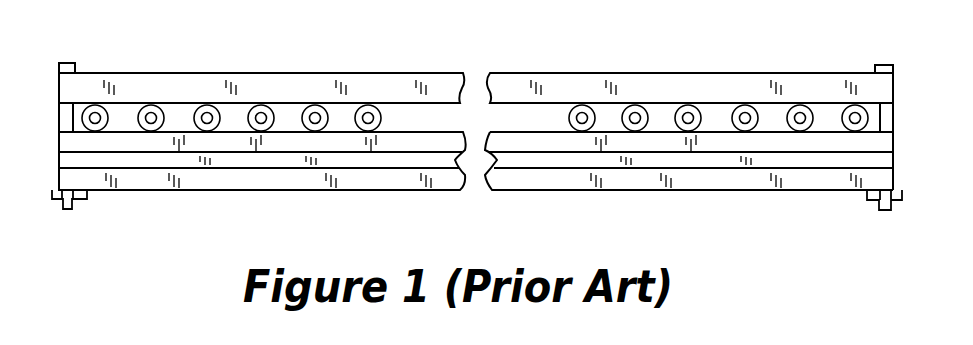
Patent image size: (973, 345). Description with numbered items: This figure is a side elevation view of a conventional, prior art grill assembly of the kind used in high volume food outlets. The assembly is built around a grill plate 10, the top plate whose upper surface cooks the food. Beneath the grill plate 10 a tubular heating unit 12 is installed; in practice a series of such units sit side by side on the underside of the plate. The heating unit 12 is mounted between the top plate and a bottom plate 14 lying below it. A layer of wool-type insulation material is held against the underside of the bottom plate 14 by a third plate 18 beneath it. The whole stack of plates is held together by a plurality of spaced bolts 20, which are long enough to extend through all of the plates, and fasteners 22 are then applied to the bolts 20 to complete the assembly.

The grill plate 10 is at (690, 67).
The tubular heating unit 12 is at (228, 114).
The bottom plate 14 is at (893, 140).
The third plate 18 is at (348, 190).
The spaced bolts 20 is at (70, 63).
The fasteners 22 is at (87, 199).